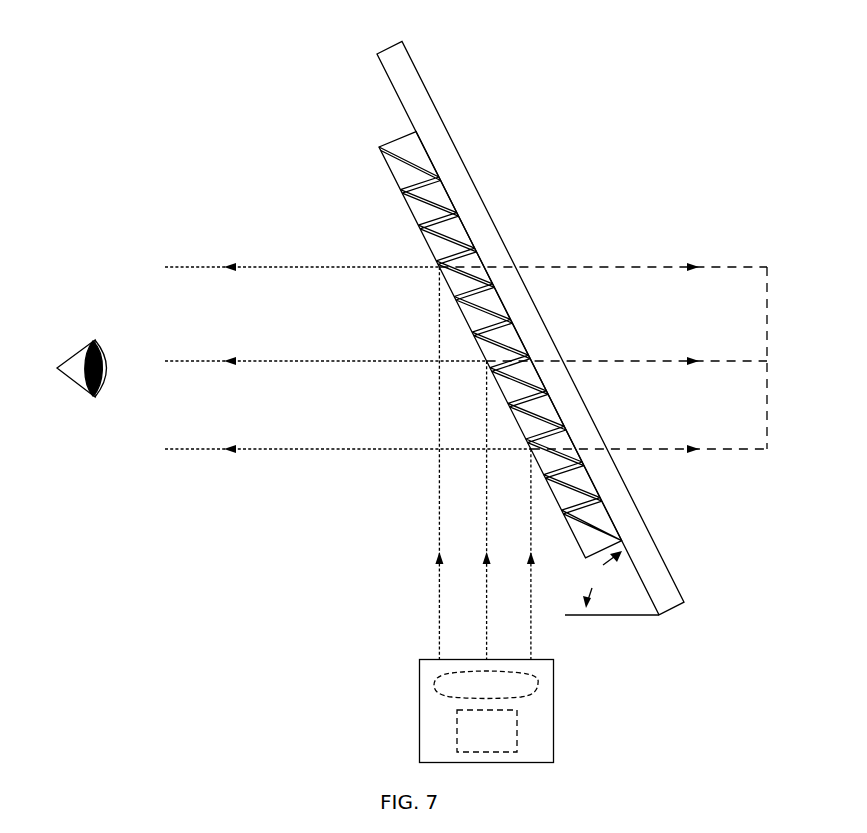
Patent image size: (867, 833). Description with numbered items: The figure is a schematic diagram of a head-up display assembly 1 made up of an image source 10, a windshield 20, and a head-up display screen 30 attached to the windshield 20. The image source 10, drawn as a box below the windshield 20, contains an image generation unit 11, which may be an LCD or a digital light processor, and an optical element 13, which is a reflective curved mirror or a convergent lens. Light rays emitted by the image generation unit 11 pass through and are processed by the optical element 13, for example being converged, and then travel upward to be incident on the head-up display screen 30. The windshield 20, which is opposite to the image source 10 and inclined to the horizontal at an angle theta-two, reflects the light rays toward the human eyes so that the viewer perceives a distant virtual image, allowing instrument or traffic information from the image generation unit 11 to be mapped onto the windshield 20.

The head-up display assembly 1 is at (114, 29).
The image source 10 is at (545, 708).
The image generation unit 11 is at (507, 741).
The optical element 13 is at (452, 683).
The windshield 20 is at (633, 535).
The head-up display screen 30 is at (442, 185).